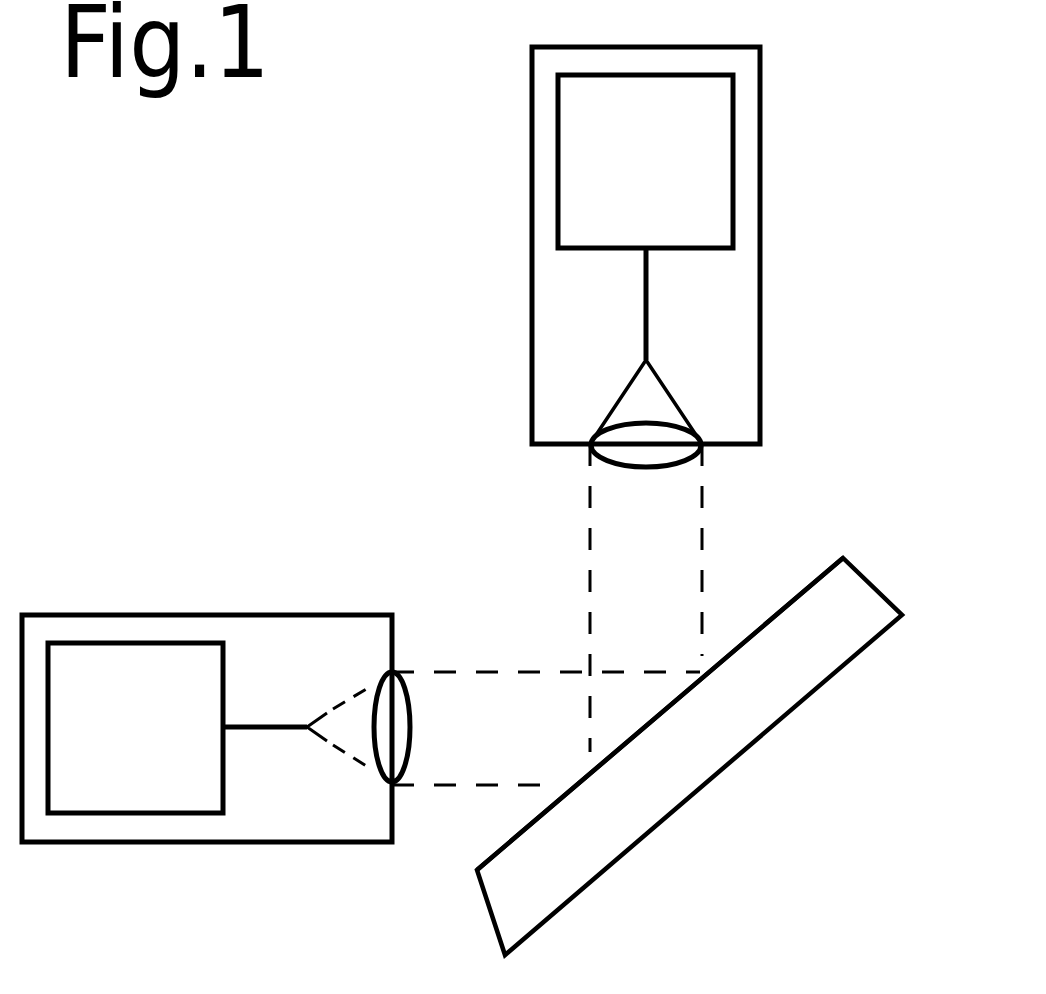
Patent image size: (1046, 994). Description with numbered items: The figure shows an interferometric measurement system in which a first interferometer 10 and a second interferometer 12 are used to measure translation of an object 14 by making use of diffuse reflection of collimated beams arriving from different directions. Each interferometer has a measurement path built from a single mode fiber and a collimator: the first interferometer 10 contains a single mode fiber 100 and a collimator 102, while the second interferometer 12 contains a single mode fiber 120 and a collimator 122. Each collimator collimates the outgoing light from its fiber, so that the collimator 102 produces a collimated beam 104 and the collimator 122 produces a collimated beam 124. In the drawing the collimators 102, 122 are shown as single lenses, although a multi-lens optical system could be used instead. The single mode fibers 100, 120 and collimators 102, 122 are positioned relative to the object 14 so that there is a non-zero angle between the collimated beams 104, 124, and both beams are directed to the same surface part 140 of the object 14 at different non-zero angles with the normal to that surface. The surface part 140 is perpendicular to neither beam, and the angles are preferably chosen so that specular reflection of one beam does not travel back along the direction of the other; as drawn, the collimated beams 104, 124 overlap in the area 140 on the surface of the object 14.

The first interferometer 10 is at (273, 614).
The single mode fiber 100 is at (280, 730).
The collimator 102 is at (407, 697).
The collimated beam 104 is at (418, 785).
The second interferometer 12 is at (532, 165).
The single mode fiber 120 is at (646, 300).
The collimator 122 is at (687, 458).
The collimated beam 124 is at (590, 508).
The object 14 is at (618, 868).
The surface part 140 is at (673, 703).